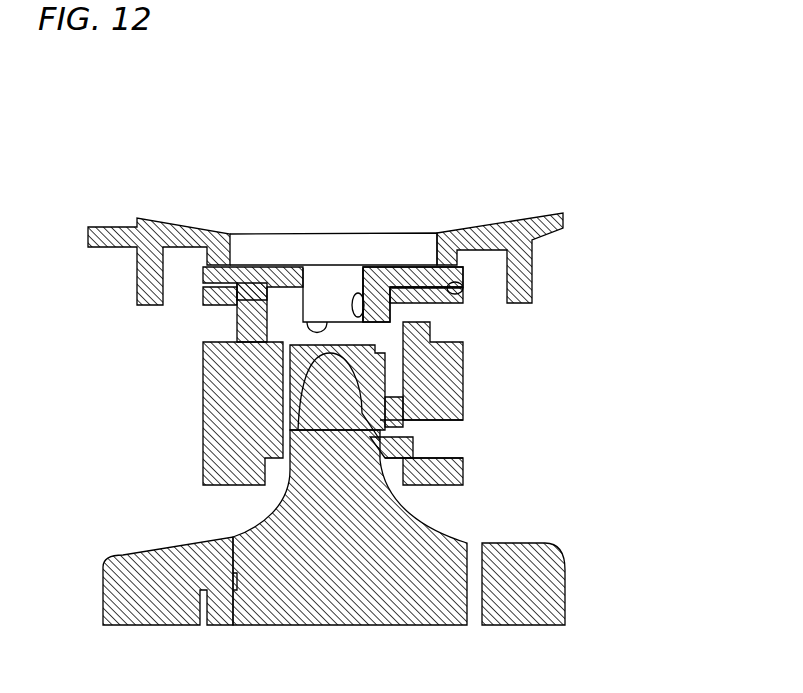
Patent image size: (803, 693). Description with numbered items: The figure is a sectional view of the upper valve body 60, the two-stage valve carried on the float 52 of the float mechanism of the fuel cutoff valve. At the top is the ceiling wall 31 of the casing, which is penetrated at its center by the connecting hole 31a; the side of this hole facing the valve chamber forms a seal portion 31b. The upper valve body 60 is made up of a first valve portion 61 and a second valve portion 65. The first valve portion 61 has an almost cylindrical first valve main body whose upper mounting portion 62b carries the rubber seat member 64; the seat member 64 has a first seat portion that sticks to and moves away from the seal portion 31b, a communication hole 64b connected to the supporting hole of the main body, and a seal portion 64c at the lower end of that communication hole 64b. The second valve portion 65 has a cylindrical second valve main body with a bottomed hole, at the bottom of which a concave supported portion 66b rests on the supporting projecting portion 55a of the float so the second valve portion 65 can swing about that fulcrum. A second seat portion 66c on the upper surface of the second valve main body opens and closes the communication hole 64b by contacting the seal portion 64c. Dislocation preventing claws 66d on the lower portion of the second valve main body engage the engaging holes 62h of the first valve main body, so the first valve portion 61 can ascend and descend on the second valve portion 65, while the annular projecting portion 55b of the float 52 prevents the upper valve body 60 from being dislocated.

The ceiling wall 31 is at (199, 228).
The connecting hole 31a is at (283, 233).
The seal portion 31b is at (426, 250).
The float 52 is at (565, 590).
The supporting projecting portion 55a is at (455, 460).
The annular projecting portion 55b is at (203, 462).
The upper valve body 60 is at (585, 338).
The first valve portion 61 is at (463, 290).
The mounting portion 62b is at (233, 303).
The engaging holes 62h is at (450, 448).
The seat member 64 is at (455, 268).
The communication hole 64b is at (397, 323).
The seal portion 64c is at (328, 322).
The second valve portion 65 is at (387, 390).
The supported portion 66b is at (403, 405).
The second seat portion 66c is at (292, 350).
The dislocation preventing claws 66d is at (442, 484).